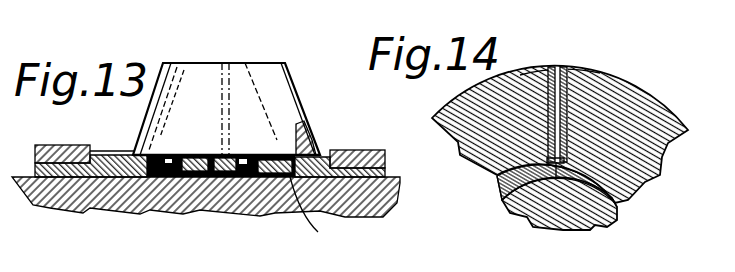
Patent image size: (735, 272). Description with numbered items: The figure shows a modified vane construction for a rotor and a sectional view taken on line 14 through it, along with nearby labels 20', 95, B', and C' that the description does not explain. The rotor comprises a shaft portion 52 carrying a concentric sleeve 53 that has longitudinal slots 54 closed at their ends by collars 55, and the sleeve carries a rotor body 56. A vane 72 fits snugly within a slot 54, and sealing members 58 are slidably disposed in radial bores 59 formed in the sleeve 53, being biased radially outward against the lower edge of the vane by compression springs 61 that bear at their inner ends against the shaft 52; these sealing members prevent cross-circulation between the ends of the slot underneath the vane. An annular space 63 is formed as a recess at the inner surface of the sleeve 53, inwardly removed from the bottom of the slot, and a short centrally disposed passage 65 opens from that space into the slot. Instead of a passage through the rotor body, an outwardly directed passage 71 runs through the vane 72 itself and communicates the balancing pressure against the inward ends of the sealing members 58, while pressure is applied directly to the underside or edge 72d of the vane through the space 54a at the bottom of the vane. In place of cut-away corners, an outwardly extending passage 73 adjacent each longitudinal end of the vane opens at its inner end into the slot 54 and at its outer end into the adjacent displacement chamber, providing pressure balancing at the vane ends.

In FIG. 13, the section line 14 is at (225, 63).
In FIG. 13, the section line reference 20' is at (155, 261).
In FIG. 13, the shaft portion 52 is at (373, 197).
In FIG. 14, the shaft portion 52 is at (560, 217).
In FIG. 13, the sleeve 53 is at (335, 150).
In FIG. 13, the longitudinal slot 54 is at (105, 147).
In FIG. 14, the longitudinal slot 54 is at (570, 74).
In FIG. 13, the space at bottom of vane 54a is at (203, 156).
In FIG. 14, the space at bottom of vane 54a is at (497, 176).
In FIG. 13, the collar 55 is at (385, 168).
In FIG. 13, the rotor body 56 is at (258, 80).
In FIG. 14, the rotor body 56 is at (623, 100).
In FIG. 13, the sealing member 58 is at (143, 180).
In FIG. 13, the radial bore 59 is at (188, 157).
In FIG. 13, the compression spring 61 is at (284, 152).
In FIG. 14, the annular space 63 is at (613, 201).
In FIG. 13, the centrally disposed passage 65 is at (219, 177).
In FIG. 14, the centrally disposed passage 65 is at (500, 193).
In FIG. 13, the outwardly directed passage 71 is at (229, 112).
In FIG. 14, the outwardly directed passage 71 is at (553, 68).
In FIG. 13, the vane 72 is at (277, 97).
In FIG. 14, the vane 72 is at (560, 100).
In FIG. 13, the underside or edge of vane 72d is at (322, 212).
In FIG. 13, the outwardly extending passage 73 is at (162, 121).
In FIG. 13, the reference label 95 is at (250, 266).
In FIG. 13, the section reference B' is at (59, 261).
In FIG. 13, the section reference C' is at (339, 262).